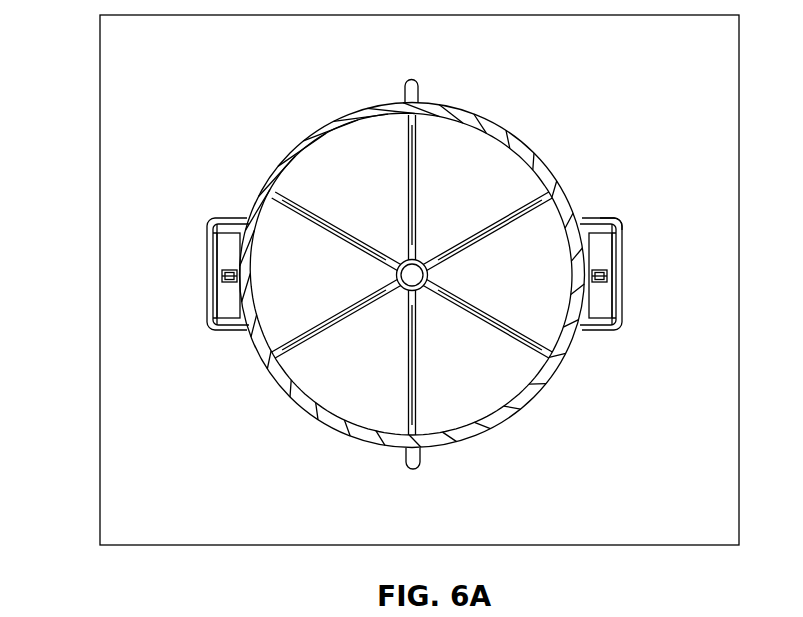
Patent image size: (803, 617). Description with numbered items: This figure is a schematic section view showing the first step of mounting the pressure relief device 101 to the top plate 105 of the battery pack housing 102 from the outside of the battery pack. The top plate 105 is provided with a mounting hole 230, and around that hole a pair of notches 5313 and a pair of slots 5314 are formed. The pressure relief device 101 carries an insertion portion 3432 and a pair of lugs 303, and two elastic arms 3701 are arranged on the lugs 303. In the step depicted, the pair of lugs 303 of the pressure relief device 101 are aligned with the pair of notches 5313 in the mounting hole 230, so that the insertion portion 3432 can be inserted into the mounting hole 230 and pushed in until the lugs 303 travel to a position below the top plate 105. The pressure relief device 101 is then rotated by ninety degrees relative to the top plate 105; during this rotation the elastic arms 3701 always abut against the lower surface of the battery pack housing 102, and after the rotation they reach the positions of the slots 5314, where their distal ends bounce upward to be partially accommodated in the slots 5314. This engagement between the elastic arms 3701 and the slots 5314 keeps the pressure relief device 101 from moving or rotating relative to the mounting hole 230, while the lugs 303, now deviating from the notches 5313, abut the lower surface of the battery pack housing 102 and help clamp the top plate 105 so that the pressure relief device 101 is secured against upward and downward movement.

The battery pack housing 102 is at (100, 135).
The top plate 105 is at (627, 121).
The pressure relief device 101 is at (535, 146).
The insertion portion 3432 is at (536, 393).
The slot 5314 is at (421, 79).
The lug 303 is at (235, 225).
The notch 5313 is at (205, 307).
The elastic arm 3701 is at (607, 272).
The mounting hole 230 is at (618, 220).